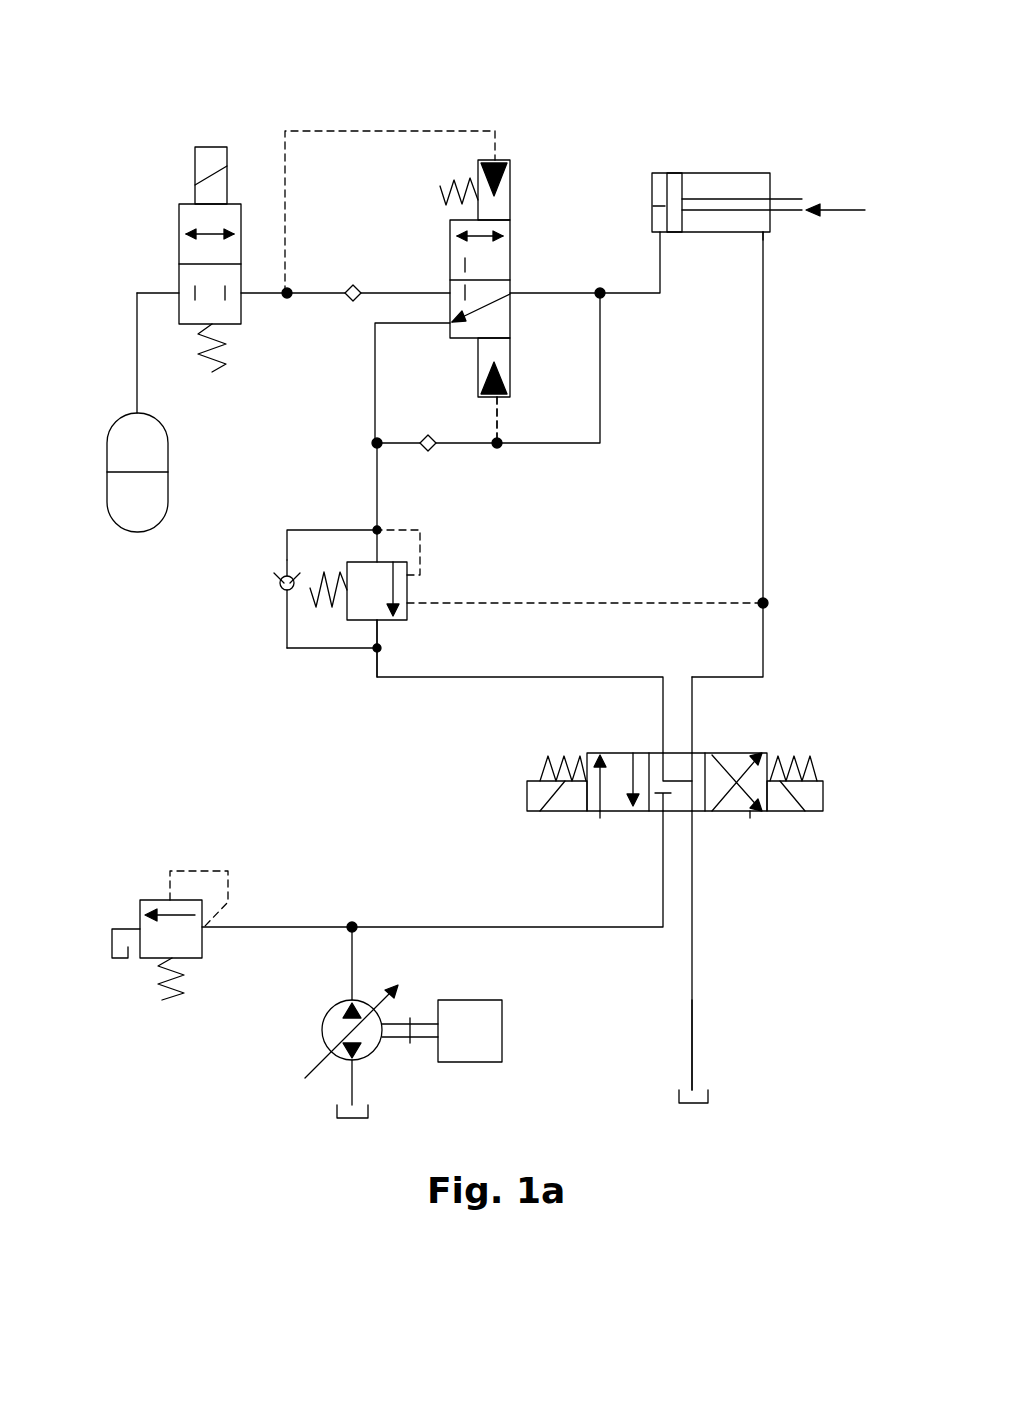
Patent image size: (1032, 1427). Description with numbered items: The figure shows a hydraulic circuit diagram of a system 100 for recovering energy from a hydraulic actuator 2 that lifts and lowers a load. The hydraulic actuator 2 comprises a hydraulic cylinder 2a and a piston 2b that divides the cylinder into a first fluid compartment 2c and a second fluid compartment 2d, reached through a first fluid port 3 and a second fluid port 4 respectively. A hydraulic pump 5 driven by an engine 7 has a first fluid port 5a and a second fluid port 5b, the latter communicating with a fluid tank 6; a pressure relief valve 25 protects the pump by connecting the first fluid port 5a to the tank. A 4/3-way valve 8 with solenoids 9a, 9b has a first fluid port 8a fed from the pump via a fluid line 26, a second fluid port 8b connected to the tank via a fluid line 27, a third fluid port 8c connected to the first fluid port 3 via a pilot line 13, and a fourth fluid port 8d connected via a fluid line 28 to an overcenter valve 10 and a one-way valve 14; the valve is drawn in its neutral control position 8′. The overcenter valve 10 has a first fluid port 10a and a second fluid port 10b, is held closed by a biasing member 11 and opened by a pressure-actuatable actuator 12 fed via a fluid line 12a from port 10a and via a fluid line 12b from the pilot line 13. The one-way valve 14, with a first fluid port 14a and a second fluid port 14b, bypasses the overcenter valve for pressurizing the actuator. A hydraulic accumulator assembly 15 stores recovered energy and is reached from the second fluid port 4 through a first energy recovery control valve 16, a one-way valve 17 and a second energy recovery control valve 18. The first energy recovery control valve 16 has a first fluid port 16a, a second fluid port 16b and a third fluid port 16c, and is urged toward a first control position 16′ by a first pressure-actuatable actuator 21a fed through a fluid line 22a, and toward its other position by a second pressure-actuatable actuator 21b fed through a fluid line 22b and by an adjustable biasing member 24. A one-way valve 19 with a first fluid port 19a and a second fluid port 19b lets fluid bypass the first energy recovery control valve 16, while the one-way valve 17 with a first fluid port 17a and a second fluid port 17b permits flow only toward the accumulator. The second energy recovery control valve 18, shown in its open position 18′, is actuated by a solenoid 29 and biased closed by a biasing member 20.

The system 100 is at (186, 1158).
The hydraulic actuator 2 is at (727, 196).
The hydraulic cylinder 2a is at (780, 188).
The piston 2b is at (665, 200).
The first fluid compartment 2c is at (728, 238).
The second fluid compartment 2d is at (655, 215).
The first fluid port 3 is at (763, 236).
The second fluid port 4 is at (660, 236).
The hydraulic pump 5 is at (325, 1047).
The first fluid port 5a is at (345, 1005).
The second fluid port 5b is at (348, 1062).
The fluid tank 6 is at (100, 945).
The engine 7 is at (503, 1035).
The 4/3-way valve 8 is at (676, 842).
The first (neutral) control position 8′ is at (675, 815).
The first fluid port 8a is at (660, 814).
The second fluid port 8b is at (696, 814).
The third fluid port 8c is at (700, 752).
The fourth fluid port 8d is at (658, 750).
The solenoid 9a is at (540, 814).
The solenoid 9b is at (815, 814).
The overcenter valve 10 is at (379, 585).
The first fluid port 10a is at (382, 532).
The second fluid port 10b is at (385, 648).
The biasing member 11 is at (322, 615).
The pressure-actuatable actuator 12 is at (410, 595).
The fluid line 12a is at (422, 560).
The fluid line 12b is at (608, 606).
The pilot line 13 is at (766, 478).
The one-way valve 14 is at (272, 592).
The first fluid port 14a is at (372, 533).
The second fluid port 14b is at (374, 660).
The hydraulic accumulator assembly 15 is at (120, 532).
The first energy recovery control valve 16 is at (480, 244).
The first control position 16′ is at (512, 342).
The first fluid port 16a is at (510, 300).
The second fluid port 16b is at (455, 330).
The third fluid port 16c is at (448, 292).
The one-way valve 17 is at (352, 275).
The first fluid port 17a is at (448, 296).
The second fluid port 17b is at (287, 297).
The second energy recovery control valve 18 is at (174, 241).
The open position 18′ is at (178, 276).
The one-way valve 19 is at (447, 455).
The first fluid port 19a is at (502, 450).
The second fluid port 19b is at (373, 441).
The biasing member 20 is at (212, 385).
The first pressure-actuatable actuator 21a is at (492, 395).
The second pressure-actuatable actuator 21b is at (505, 150).
The fluid line 22a is at (510, 418).
The fluid line 22b is at (380, 128).
The adjustable biasing member 24 is at (438, 178).
The pressure relief valve 25 is at (145, 865).
The fluid line 26 is at (385, 925).
The fluid line 27 is at (695, 1005).
The fluid line 28 is at (482, 682).
The solenoid 29 is at (208, 146).